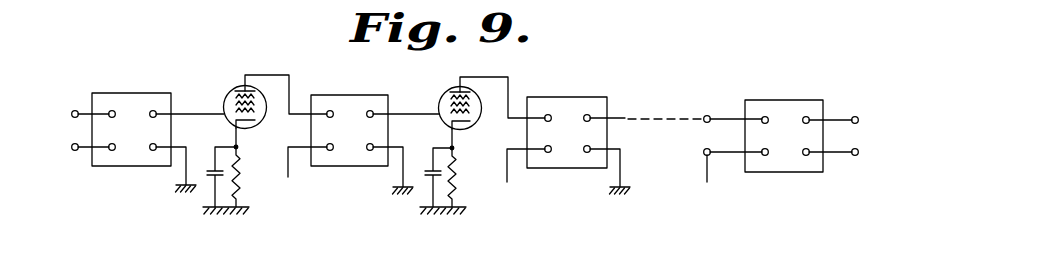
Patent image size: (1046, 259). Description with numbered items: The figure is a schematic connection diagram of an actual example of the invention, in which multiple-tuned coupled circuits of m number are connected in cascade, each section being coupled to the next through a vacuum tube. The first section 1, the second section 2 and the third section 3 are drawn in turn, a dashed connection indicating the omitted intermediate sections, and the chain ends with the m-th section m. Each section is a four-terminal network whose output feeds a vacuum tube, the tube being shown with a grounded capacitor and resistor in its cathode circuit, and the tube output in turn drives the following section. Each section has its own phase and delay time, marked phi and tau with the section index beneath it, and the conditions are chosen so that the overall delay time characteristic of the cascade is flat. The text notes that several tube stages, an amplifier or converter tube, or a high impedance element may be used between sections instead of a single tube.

The first multiple-tuned coupled circuit section 1 is at (131, 101).
The second multiple-tuned coupled circuit section 2 is at (346, 105).
The third multiple-tuned coupled circuit section 3 is at (563, 108).
The m-th multiple-tuned coupled circuit section m is at (780, 108).